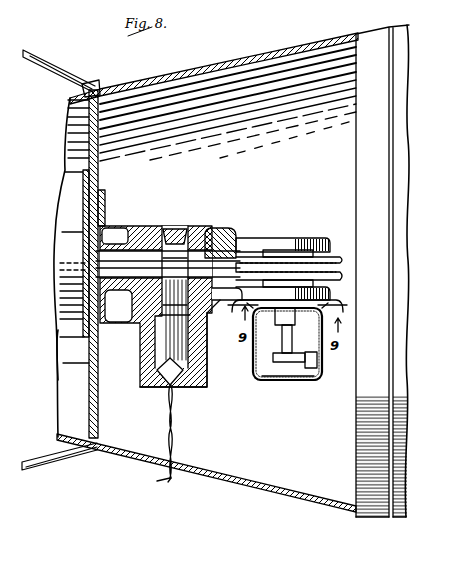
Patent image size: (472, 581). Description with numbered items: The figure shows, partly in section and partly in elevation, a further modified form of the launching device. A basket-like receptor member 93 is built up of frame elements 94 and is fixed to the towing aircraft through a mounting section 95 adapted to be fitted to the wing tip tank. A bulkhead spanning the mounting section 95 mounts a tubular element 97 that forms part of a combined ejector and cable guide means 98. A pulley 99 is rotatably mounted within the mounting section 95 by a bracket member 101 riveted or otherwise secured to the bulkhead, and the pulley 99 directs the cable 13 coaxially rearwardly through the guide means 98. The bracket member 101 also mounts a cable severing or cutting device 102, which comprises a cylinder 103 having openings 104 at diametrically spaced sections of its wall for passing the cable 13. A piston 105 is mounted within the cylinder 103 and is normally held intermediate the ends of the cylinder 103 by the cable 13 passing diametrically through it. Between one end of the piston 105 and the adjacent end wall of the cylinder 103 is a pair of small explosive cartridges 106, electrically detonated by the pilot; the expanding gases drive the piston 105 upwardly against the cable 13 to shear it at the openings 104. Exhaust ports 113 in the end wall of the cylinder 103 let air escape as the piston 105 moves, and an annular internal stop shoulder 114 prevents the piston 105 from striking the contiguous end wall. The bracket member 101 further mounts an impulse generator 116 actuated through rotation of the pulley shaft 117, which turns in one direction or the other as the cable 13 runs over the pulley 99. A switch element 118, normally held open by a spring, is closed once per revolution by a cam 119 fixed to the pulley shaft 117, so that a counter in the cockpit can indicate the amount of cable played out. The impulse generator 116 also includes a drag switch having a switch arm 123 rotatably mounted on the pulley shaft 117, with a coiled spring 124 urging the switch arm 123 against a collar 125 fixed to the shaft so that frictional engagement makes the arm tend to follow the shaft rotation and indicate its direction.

The cable 13 is at (50, 278).
The receptor member 93 is at (64, 72).
The frame elements 94 is at (37, 62).
The mounting section 95 is at (257, 62).
The tubular element 97 is at (57, 323).
The combined ejector and cable guide means 98 is at (50, 224).
The pulley 99 is at (337, 268).
The bracket member 101 is at (220, 234).
The cable severing or cutting device 102 is at (137, 397).
The cylinder 103 is at (148, 228).
The openings 104 is at (192, 232).
The piston 105 is at (134, 302).
The explosive cartridges 106 is at (176, 335).
The exhaust ports 113 is at (172, 229).
The annular internal stop shoulder 114 is at (212, 313).
The impulse generator 116 is at (293, 389).
The pulley shaft 117 is at (285, 357).
The switch element 118 is at (322, 360).
The cam 119 is at (270, 375).
The switch arm 123 is at (250, 305).
The coiled spring 124 is at (323, 306).
The collar 125 is at (283, 332).